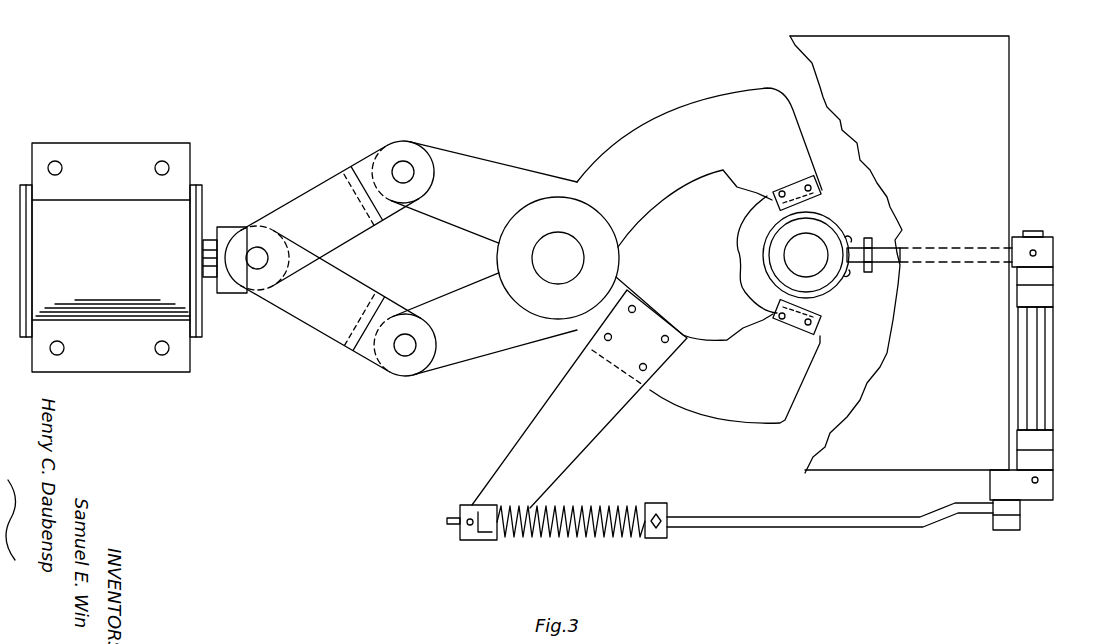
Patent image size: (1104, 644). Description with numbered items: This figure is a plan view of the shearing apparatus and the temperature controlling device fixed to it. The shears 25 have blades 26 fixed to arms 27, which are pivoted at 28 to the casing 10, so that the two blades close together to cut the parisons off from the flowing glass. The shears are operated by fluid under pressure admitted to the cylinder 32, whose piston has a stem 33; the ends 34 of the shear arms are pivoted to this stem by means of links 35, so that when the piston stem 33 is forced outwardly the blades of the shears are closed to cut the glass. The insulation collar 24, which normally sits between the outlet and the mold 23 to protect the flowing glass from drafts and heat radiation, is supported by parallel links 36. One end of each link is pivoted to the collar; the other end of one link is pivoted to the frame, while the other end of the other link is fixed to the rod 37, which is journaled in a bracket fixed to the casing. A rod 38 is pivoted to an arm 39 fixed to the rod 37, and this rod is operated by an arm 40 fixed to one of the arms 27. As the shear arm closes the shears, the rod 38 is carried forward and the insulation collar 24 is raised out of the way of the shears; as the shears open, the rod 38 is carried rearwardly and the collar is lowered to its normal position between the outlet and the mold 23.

The casing 10 is at (827, 445).
The mold 23 is at (827, 310).
The insulation collar 24 is at (823, 212).
The shears 25 is at (691, 167).
The blades 26 is at (743, 290).
The arms 27 is at (652, 200).
The pivot 28 is at (558, 258).
The cylinder 32 is at (111, 257).
The piston stem 33 is at (218, 282).
The ends of the arms 34 is at (442, 213).
The links 35 is at (357, 227).
The parallel links 36 is at (895, 240).
The rod 37 is at (1043, 386).
The rod 38 is at (752, 502).
The arm 39 is at (998, 490).
The arm 40 is at (532, 420).